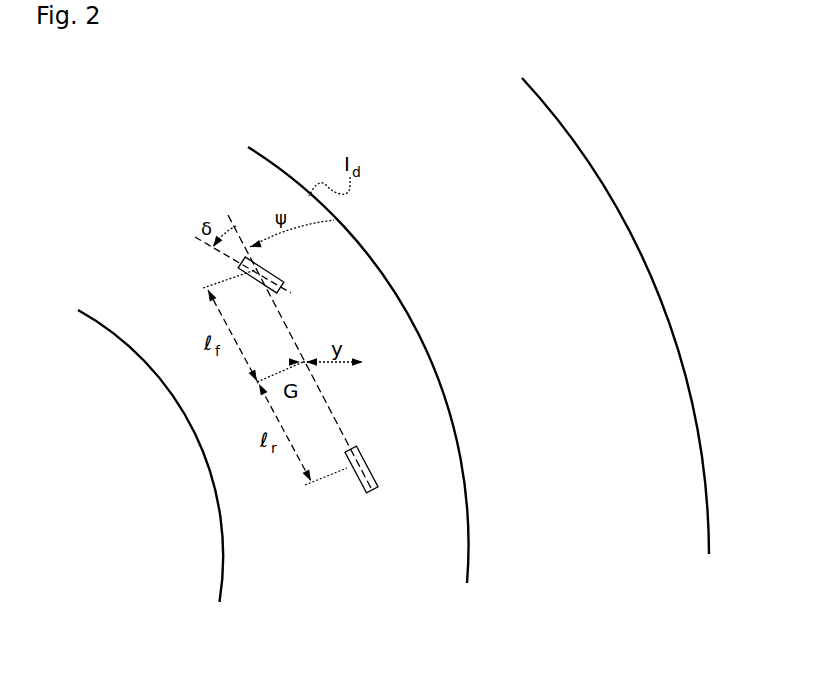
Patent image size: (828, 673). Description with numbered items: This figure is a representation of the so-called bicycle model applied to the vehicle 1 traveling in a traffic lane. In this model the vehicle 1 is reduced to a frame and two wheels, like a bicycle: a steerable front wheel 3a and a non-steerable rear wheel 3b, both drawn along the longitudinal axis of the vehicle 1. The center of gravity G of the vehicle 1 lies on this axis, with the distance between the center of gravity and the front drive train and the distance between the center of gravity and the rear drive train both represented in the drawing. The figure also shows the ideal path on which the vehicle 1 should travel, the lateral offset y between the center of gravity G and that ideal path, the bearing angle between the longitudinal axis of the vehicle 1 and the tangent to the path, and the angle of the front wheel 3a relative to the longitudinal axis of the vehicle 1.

The vehicle 1 is at (302, 337).
The steerable front wheel 3a is at (277, 280).
The non-steerable rear wheel 3b is at (375, 472).